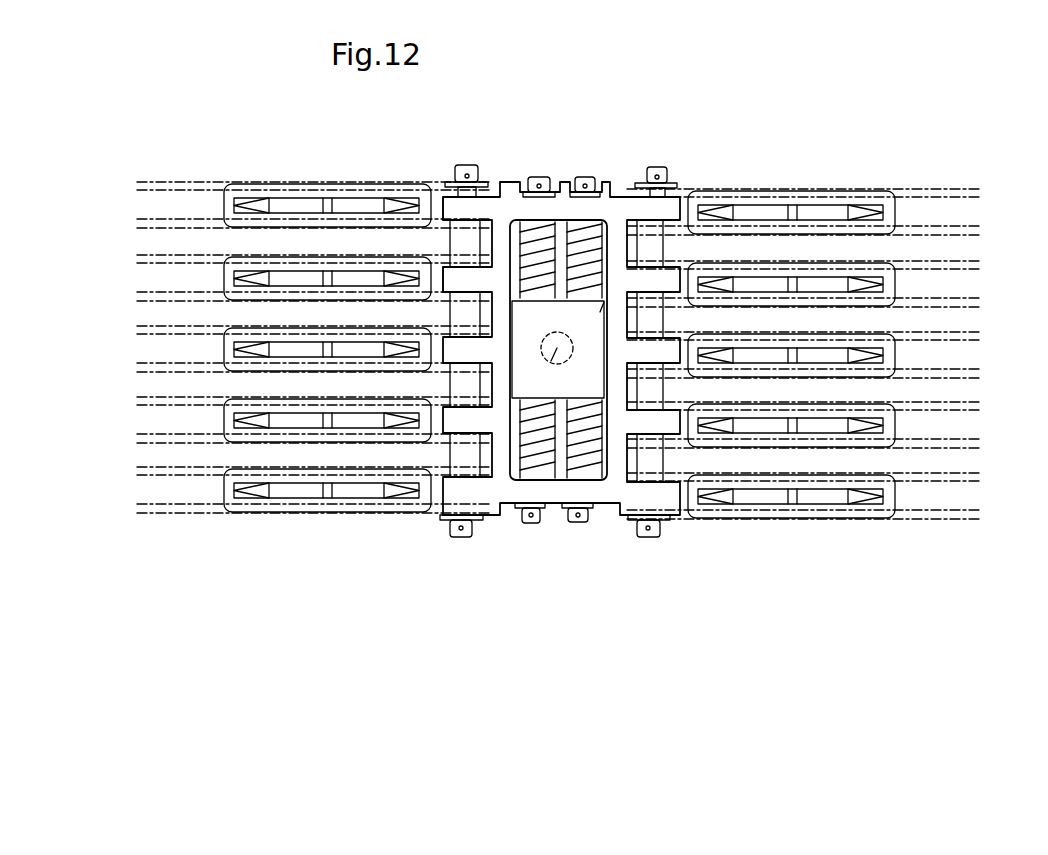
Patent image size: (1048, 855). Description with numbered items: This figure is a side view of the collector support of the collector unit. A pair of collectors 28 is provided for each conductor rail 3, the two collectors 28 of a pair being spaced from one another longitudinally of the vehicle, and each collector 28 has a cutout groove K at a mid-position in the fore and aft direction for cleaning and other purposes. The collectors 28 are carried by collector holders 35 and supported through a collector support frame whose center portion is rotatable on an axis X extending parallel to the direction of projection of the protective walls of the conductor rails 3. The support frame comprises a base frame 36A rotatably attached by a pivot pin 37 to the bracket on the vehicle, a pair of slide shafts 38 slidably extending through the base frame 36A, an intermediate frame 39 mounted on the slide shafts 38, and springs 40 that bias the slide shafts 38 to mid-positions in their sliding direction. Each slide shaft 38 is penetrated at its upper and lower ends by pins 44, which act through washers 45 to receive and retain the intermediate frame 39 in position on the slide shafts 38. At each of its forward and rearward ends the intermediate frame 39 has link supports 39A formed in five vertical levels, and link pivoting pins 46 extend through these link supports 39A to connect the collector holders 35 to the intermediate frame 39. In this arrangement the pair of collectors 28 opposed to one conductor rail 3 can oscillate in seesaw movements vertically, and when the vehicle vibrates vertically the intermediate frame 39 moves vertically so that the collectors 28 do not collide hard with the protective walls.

The conductor rail 3 is at (193, 182).
The collector 28 is at (303, 275).
The collector holder 35 is at (243, 185).
The base frame 36A is at (602, 310).
The pivot pin 37 is at (558, 350).
The slide shaft 38 is at (545, 187).
The intermediate frame 39 is at (490, 530).
The link support 39A is at (456, 278).
The spring 40 is at (500, 195).
The pin 44 is at (533, 192).
The washer 45 is at (520, 195).
The link pivoting pin 46 is at (450, 533).
The cutout groove K is at (793, 208).
The axis X is at (554, 360).